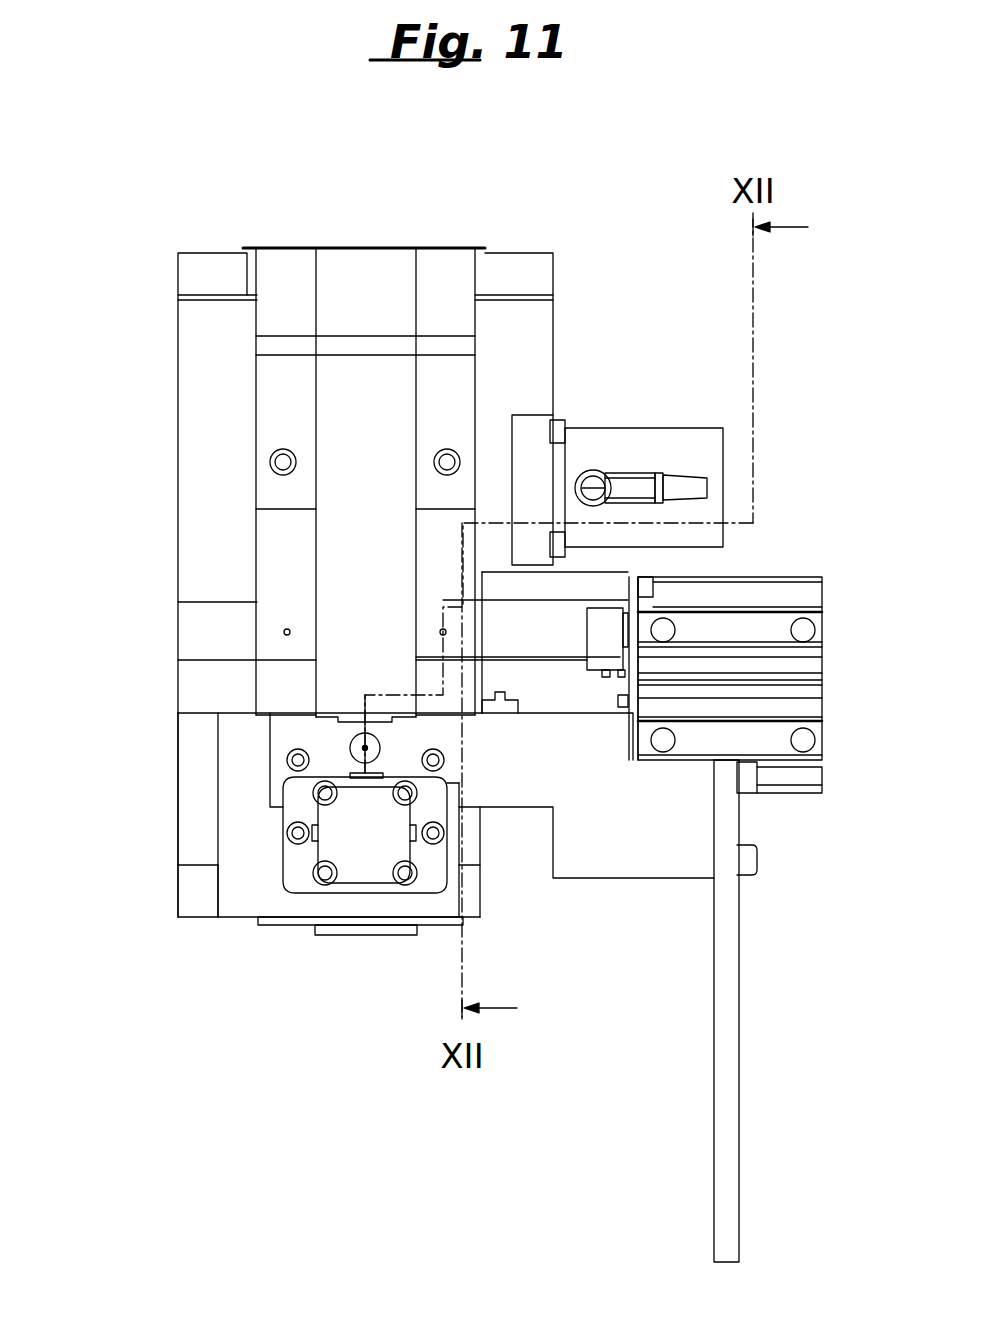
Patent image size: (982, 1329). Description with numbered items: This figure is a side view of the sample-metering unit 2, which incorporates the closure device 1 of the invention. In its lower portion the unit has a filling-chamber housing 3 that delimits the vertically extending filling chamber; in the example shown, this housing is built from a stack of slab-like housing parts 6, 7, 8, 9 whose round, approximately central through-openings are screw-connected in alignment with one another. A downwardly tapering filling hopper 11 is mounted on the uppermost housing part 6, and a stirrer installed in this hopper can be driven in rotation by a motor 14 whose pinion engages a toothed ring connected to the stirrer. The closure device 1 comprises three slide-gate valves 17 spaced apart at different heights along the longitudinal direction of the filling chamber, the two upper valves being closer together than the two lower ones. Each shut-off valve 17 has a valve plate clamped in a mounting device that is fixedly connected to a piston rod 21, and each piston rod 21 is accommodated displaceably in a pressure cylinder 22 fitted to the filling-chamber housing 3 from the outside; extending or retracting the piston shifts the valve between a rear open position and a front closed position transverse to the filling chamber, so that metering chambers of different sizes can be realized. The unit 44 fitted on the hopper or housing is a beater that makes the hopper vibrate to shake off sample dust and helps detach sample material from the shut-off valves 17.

The closure device 1 is at (167, 967).
The sample-metering unit 2 is at (565, 225).
The filling-chamber housing 3 is at (198, 700).
The housing part 6 is at (200, 616).
The housing part 7 is at (200, 676).
The housing part 8 is at (200, 797).
The housing part 9 is at (200, 898).
The filling hopper 11 is at (200, 422).
The motor 14 is at (387, 405).
The slide-gate valve 17 is at (552, 657).
The piston rod 21 is at (607, 632).
The pressure cylinder 22 is at (778, 620).
The beater 44 is at (653, 443).